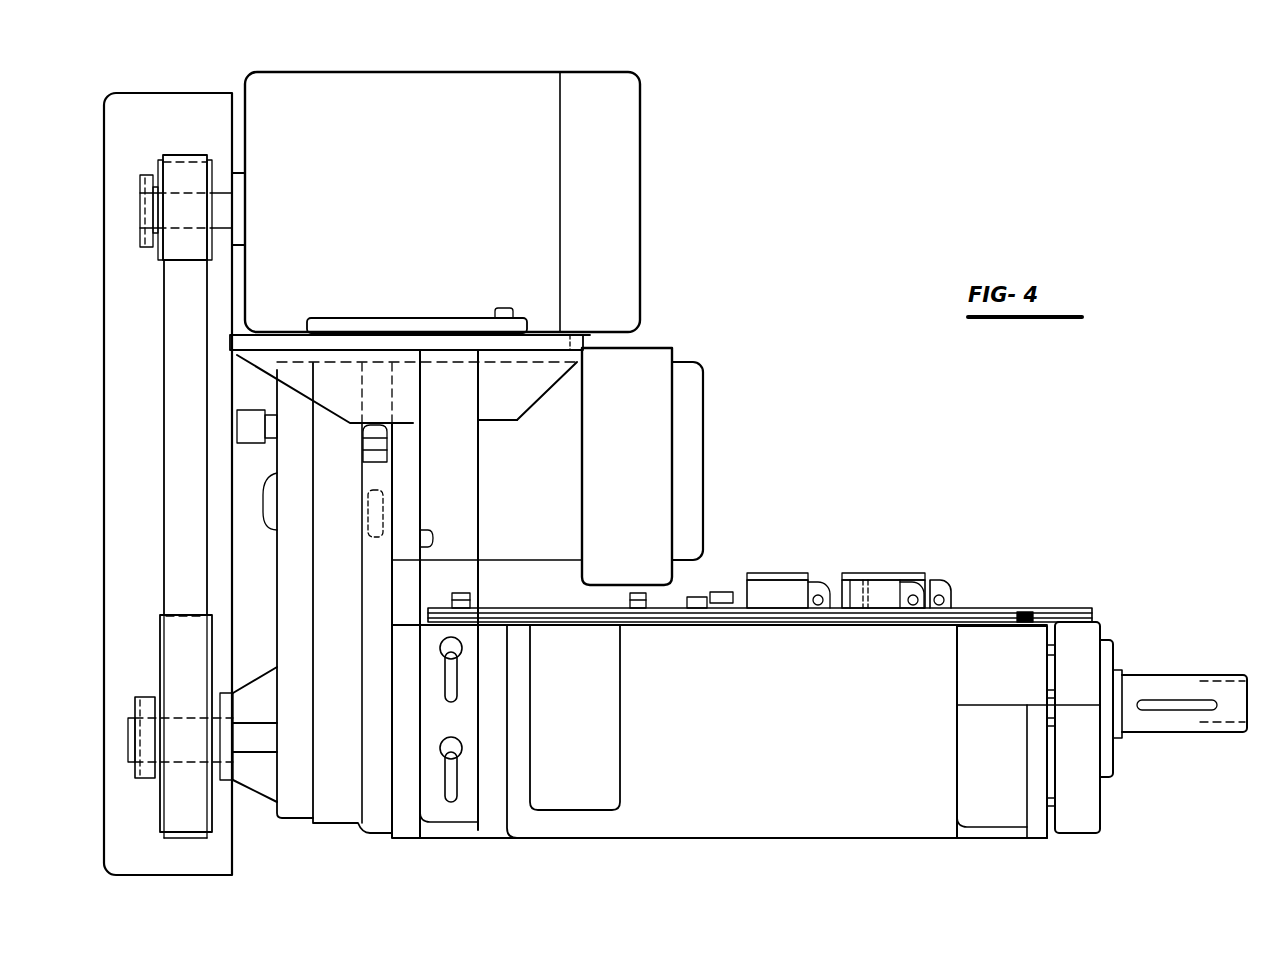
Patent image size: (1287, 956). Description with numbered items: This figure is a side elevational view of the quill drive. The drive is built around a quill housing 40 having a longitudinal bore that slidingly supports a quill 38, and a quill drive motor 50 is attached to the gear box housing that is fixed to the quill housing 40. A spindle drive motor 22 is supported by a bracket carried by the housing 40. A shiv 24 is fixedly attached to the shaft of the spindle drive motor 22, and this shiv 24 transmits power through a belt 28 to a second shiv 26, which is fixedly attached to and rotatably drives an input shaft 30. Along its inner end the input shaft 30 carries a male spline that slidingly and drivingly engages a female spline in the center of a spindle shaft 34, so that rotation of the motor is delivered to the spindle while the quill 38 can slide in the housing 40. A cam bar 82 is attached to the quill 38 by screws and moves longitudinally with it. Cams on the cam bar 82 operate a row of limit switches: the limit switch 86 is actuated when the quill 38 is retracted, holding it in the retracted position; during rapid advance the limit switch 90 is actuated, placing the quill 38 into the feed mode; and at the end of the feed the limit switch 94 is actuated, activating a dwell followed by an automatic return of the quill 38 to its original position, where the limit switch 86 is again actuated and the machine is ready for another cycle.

The spindle drive motor 22 is at (623, 200).
The shiv 24 is at (176, 163).
The second shiv 26 is at (178, 615).
The belt 28 is at (178, 437).
The input shaft 30 is at (147, 743).
The spindle shaft 34 is at (1193, 675).
The quill 38 is at (1113, 650).
The quill housing 40 is at (990, 632).
The quill drive motor 50 is at (692, 437).
The cam bar 82 is at (1072, 607).
The limit switch 86 is at (947, 582).
The limit switch 90 is at (885, 585).
The limit switch 94 is at (773, 592).